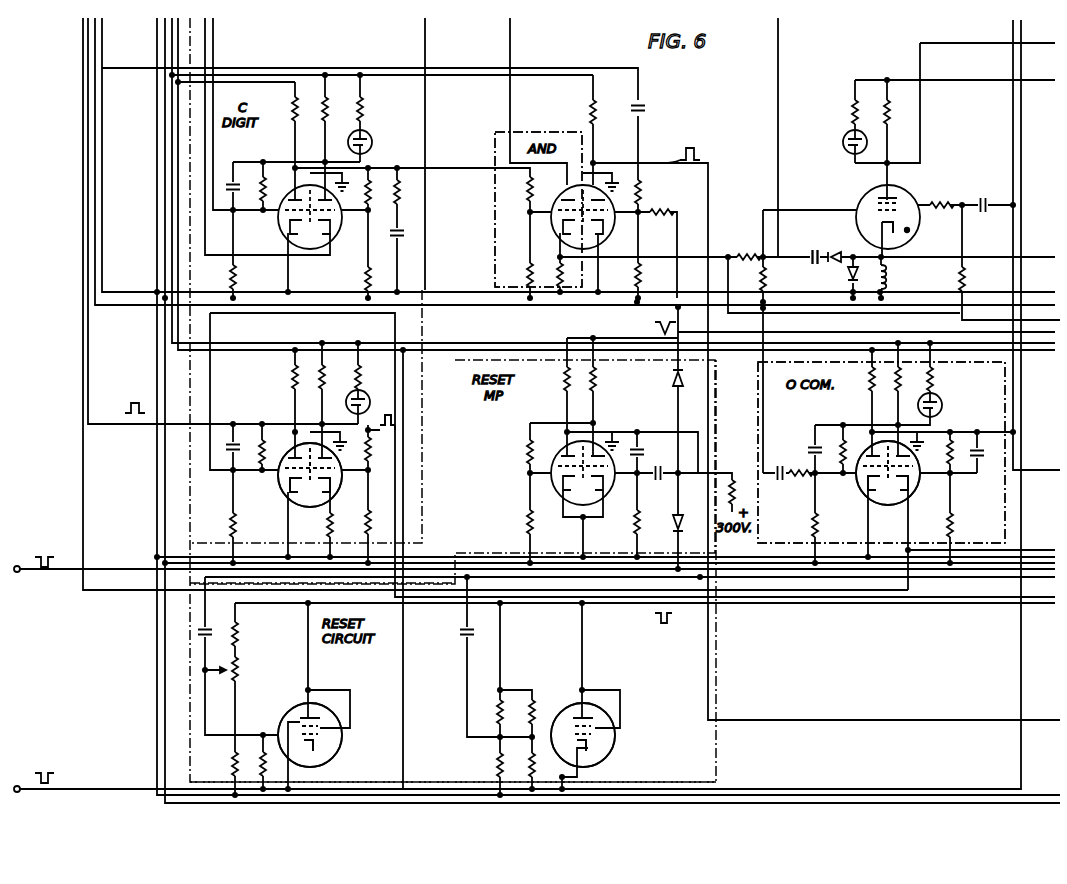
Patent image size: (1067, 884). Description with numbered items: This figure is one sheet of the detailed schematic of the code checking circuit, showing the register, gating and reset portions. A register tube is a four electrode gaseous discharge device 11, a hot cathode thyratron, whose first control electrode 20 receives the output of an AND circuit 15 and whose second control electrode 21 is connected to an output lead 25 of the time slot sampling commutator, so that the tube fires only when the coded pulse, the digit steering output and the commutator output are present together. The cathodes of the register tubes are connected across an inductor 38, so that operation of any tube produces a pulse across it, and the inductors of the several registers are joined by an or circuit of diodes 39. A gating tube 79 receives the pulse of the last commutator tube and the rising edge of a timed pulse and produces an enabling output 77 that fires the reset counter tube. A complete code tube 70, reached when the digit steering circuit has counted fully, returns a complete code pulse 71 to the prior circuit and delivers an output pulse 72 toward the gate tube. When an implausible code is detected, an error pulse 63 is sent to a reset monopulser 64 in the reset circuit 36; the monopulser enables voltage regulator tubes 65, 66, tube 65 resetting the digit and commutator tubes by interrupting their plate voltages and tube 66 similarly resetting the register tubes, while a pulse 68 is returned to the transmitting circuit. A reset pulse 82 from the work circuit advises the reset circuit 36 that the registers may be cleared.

The enabling output 77 is at (700, 148).
The AND circuit 15 is at (466, 224).
The gating tube 79 is at (606, 227).
The four electrode gaseous discharge device 11 is at (912, 197).
The control electrode 21 is at (872, 203).
The control electrode 20 is at (905, 213).
The diode 39 is at (836, 250).
The inductor 38 is at (890, 276).
The complete code pulse 71 is at (146, 404).
The output pulse 72 is at (388, 405).
The complete code tube 70 is at (277, 487).
The reset pulse 82 is at (655, 328).
The reset monopulser 64 is at (550, 482).
The output lead 25 is at (1010, 388).
The error pulse 63 is at (686, 576).
The reset circuit 36 is at (386, 695).
The voltage regulator tube 65 is at (338, 752).
The voltage regulator tube 66 is at (607, 748).
The pulse 68 is at (50, 771).